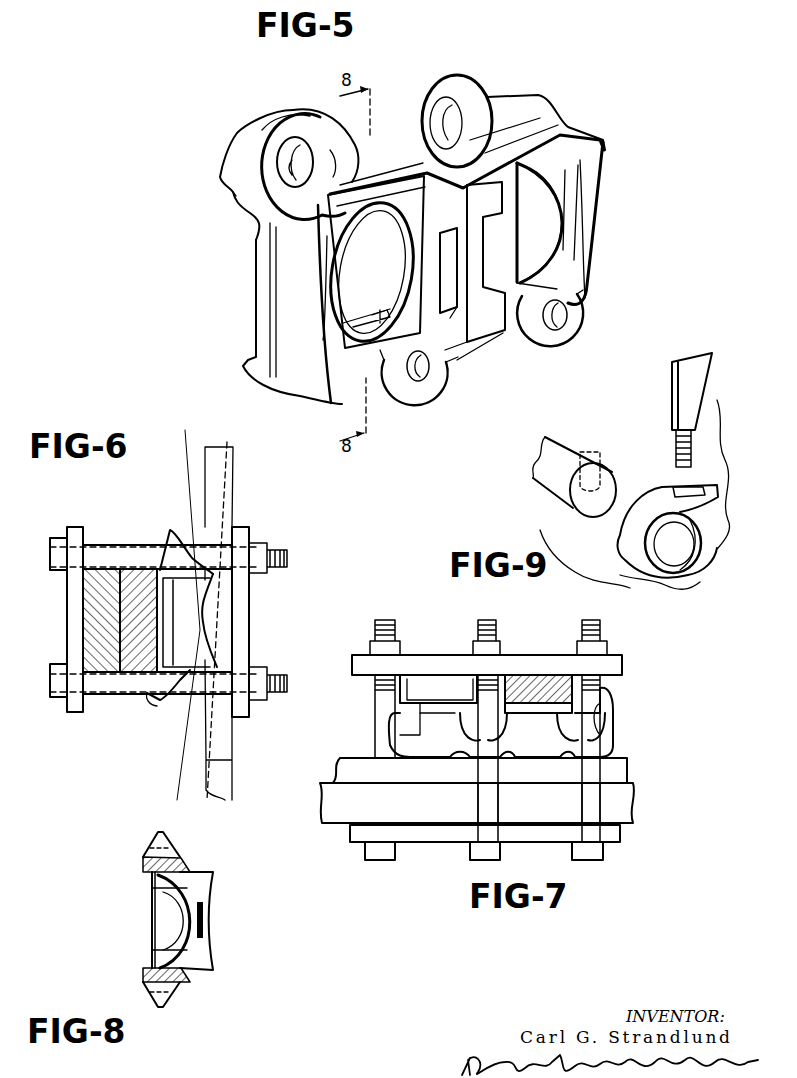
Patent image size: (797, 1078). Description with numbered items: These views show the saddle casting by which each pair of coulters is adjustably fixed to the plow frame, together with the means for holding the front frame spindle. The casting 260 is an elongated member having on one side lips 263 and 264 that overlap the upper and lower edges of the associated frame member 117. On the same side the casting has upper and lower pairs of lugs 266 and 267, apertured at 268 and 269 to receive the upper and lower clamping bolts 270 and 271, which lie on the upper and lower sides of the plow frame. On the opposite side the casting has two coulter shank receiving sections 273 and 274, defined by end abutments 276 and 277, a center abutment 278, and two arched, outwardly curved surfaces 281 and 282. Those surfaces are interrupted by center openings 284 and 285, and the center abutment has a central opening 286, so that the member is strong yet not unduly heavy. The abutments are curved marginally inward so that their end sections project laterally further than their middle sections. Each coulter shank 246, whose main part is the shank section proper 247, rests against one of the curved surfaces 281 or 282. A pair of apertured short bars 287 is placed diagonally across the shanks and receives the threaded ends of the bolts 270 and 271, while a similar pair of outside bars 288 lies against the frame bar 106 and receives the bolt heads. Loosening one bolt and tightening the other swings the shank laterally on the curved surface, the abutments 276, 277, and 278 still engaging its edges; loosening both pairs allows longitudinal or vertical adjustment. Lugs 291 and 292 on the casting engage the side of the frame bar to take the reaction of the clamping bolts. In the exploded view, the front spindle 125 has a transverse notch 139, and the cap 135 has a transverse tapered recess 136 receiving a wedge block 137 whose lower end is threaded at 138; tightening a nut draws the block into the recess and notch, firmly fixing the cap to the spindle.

In FIG. 6, the frame bar 106 is at (95, 610).
In FIG. 7, the frame bar 106 is at (340, 803).
In FIG. 6, the frame member 117 is at (130, 578).
In FIG. 7, the frame member 117 is at (350, 760).
In FIG. 9, the front spindle 125 is at (563, 458).
In FIG. 9, the cap 135 is at (640, 533).
In FIG. 9, the transverse tapered recess 136 is at (693, 494).
In FIG. 9, the wedge block 137 is at (690, 392).
In FIG. 9, the threaded lower end 138 is at (675, 440).
In FIG. 9, the transverse notch 139 is at (590, 455).
In FIG. 6, the coulter shank 246 is at (194, 482).
In FIG. 7, the coulter shank 246 is at (430, 700).
In FIG. 6, the shank section proper 247 is at (222, 510).
In FIG. 7, the shank section proper 247 is at (447, 690).
In FIG. 5, the casting 260 is at (560, 98).
In FIG. 6, the casting 260 is at (214, 641).
In FIG. 7, the casting 260 is at (616, 714).
In FIG. 8, the casting 260 is at (185, 858).
In FIG. 5, the upper lip 263 is at (232, 190).
In FIG. 6, the upper lip 263 is at (150, 568).
In FIG. 8, the upper lip 263 is at (155, 879).
In FIG. 5, the lower lip 264 is at (250, 360).
In FIG. 6, the lower lip 264 is at (162, 702).
In FIG. 8, the lower lip 264 is at (152, 961).
In FIG. 5, the upper lugs 266 is at (286, 113).
In FIG. 6, the upper lugs 266 is at (162, 545).
In FIG. 7, the upper lugs 266 is at (503, 748).
In FIG. 8, the upper lugs 266 is at (163, 840).
In FIG. 5, the lower lugs 267 is at (530, 345).
In FIG. 6, the lower lugs 267 is at (170, 710).
In FIG. 5, the upper lug apertures 268 is at (282, 152).
In FIG. 8, the upper lug apertures 268 is at (163, 1002).
In FIG. 5, the lower lug apertures 269 is at (553, 333).
In FIG. 6, the upper clamping bolt 270 is at (100, 553).
In FIG. 7, the upper clamping bolt 270 is at (592, 810).
In FIG. 6, the lower clamping bolt 271 is at (105, 690).
In FIG. 7, the lower clamping bolt 271 is at (388, 845).
In FIG. 5, the first coulter shank receiving section 273 is at (413, 198).
In FIG. 5, the second coulter shank receiving section 274 is at (569, 174).
In FIG. 5, the first end abutment 276 is at (300, 260).
In FIG. 7, the first end abutment 276 is at (614, 703).
In FIG. 5, the second end abutment 277 is at (590, 185).
In FIG. 7, the second end abutment 277 is at (400, 694).
In FIG. 5, the center abutment 278 is at (483, 145).
In FIG. 8, the center abutment 278 is at (204, 886).
In FIG. 5, the first curved surface 281 is at (420, 220).
In FIG. 6, the first curved surface 281 is at (197, 680).
In FIG. 7, the first curved surface 281 is at (560, 710).
In FIG. 5, the second curved surface 282 is at (567, 203).
In FIG. 7, the second curved surface 282 is at (447, 710).
In FIG. 5, the center opening of first curved surface 284 is at (413, 267).
In FIG. 8, the center opening of first curved surface 284 is at (192, 943).
In FIG. 5, the center opening of second curved surface 285 is at (550, 234).
In FIG. 5, the central opening of center lug 286 is at (481, 347).
In FIG. 6, the short bars 287 is at (245, 597).
In FIG. 7, the short bars 287 is at (575, 667).
In FIG. 6, the outside bars 288 is at (76, 600).
In FIG. 8, the first reaction lug 291 is at (157, 884).
In FIG. 5, the second reaction lug 292 is at (398, 298).
In FIG. 8, the second reaction lug 292 is at (163, 958).